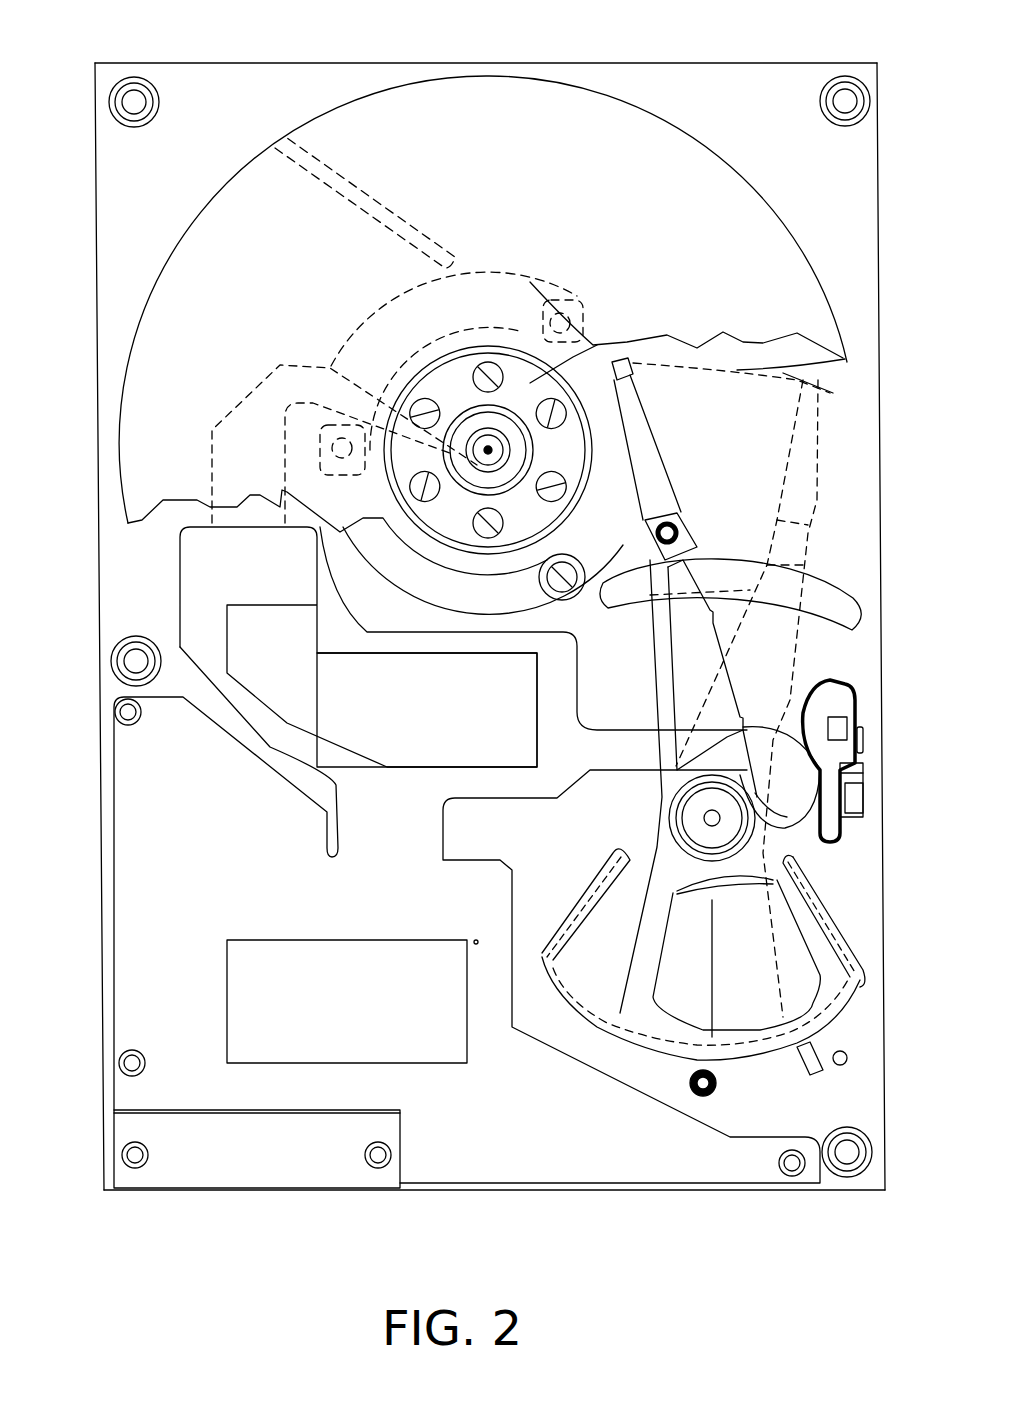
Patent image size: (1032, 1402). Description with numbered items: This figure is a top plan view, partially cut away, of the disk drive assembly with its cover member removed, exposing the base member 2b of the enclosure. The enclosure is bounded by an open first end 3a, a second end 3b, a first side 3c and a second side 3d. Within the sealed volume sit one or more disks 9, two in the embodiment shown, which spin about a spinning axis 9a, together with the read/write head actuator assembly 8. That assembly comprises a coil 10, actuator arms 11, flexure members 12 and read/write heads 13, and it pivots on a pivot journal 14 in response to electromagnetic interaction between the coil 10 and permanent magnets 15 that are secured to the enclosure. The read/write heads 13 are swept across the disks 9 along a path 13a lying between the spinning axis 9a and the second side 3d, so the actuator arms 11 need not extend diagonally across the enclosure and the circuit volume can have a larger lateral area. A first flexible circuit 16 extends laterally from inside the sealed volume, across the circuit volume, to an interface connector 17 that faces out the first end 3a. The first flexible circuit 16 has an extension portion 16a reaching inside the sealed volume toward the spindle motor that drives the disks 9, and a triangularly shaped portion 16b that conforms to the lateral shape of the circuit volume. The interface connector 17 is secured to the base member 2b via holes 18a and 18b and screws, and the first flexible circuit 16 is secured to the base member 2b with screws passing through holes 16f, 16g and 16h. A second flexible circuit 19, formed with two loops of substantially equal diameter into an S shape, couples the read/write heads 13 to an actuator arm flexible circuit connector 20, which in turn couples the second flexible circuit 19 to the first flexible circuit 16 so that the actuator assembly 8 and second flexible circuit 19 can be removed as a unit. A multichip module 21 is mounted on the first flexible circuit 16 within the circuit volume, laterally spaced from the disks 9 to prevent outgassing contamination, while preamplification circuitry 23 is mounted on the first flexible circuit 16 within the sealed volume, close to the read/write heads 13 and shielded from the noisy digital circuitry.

The base member 2b is at (160, 45).
The first end 3a is at (610, 1191).
The second end 3b is at (255, 63).
The first side 3c is at (99, 870).
The second side 3d is at (878, 562).
The read/write head actuator assembly 8 is at (780, 856).
The disk 9 is at (483, 325).
The spinning axis 9a is at (490, 450).
The coil 10 is at (858, 992).
The actuator arm 11 is at (670, 640).
The flexure member 12 is at (655, 460).
The read/write head 13 is at (636, 372).
The path 13a is at (845, 359).
The pivot journal 14 is at (712, 818).
The permanent magnet 15 is at (850, 935).
The first flexible circuit 16 is at (880, 866).
The extension portion 16a is at (397, 411).
The triangularly shaped portion 16b is at (568, 976).
The hole 16f is at (792, 1176).
The hole 16g is at (119, 1063).
The hole 16h is at (115, 712).
The interface connector 17 is at (257, 1149).
The hole 18a is at (135, 1168).
The hole 18b is at (378, 1168).
The second flexible circuit 19 is at (830, 680).
The actuator arm flexible circuit connector 20 is at (855, 797).
The multichip module 21 is at (347, 1001).
The preamplification circuitry 23 is at (427, 710).